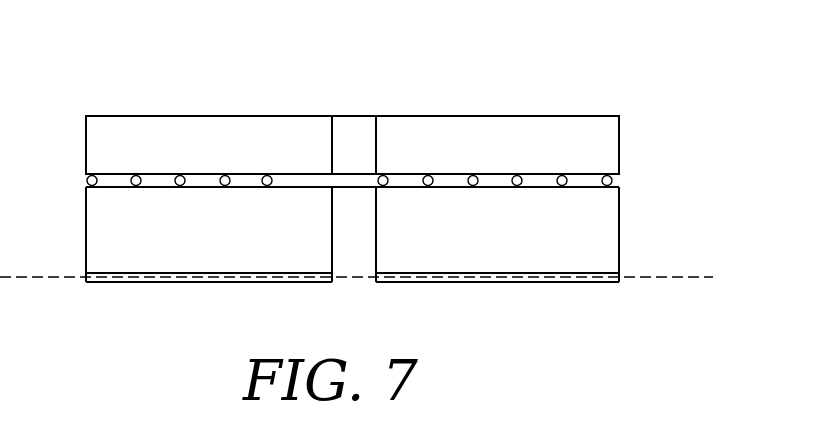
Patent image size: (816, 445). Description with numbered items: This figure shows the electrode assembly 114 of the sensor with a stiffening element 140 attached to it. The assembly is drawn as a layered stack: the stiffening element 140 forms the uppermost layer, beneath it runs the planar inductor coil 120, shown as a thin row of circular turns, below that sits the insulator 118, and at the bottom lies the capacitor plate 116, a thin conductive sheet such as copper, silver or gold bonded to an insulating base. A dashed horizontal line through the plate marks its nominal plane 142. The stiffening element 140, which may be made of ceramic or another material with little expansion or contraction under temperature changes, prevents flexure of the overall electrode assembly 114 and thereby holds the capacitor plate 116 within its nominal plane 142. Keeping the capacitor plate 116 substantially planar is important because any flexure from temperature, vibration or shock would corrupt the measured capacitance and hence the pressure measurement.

The electrode assembly 114 is at (393, 167).
The stiffening element 140 is at (600, 135).
The planar inductor coil 120 is at (616, 181).
The insulator 118 is at (602, 242).
The capacitor plate 116 is at (605, 283).
The nominal plane 142 is at (60, 278).